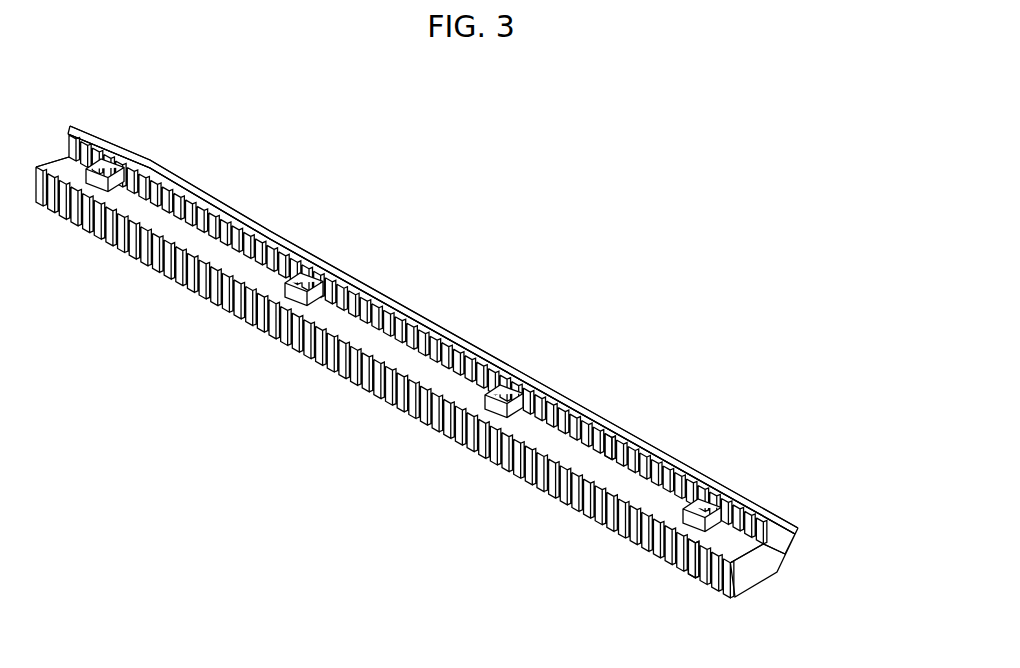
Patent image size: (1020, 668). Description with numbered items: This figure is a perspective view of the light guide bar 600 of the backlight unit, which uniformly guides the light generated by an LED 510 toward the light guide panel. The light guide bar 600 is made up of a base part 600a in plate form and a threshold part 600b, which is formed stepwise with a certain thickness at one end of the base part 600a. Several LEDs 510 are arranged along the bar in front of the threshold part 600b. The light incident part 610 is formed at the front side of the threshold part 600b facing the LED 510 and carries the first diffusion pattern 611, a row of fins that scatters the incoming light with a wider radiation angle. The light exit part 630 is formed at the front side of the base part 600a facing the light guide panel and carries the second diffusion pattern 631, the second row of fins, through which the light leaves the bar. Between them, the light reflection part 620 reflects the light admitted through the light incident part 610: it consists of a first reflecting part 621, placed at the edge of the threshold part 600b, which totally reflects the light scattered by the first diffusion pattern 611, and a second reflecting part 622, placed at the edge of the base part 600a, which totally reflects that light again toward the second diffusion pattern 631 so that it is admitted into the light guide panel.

The LED 510 is at (105, 168).
The light guide bar 600 is at (540, 252).
The base part 600a is at (378, 343).
The threshold part 600b is at (453, 350).
The light incident part 610 is at (570, 445).
The first diffusion pattern 611 is at (610, 457).
The light reflection part 620 is at (489, 361).
The first reflecting part 621 is at (770, 508).
The second reflecting part 622 is at (794, 562).
The light exit part 630 is at (650, 550).
The second diffusion pattern 631 is at (693, 563).